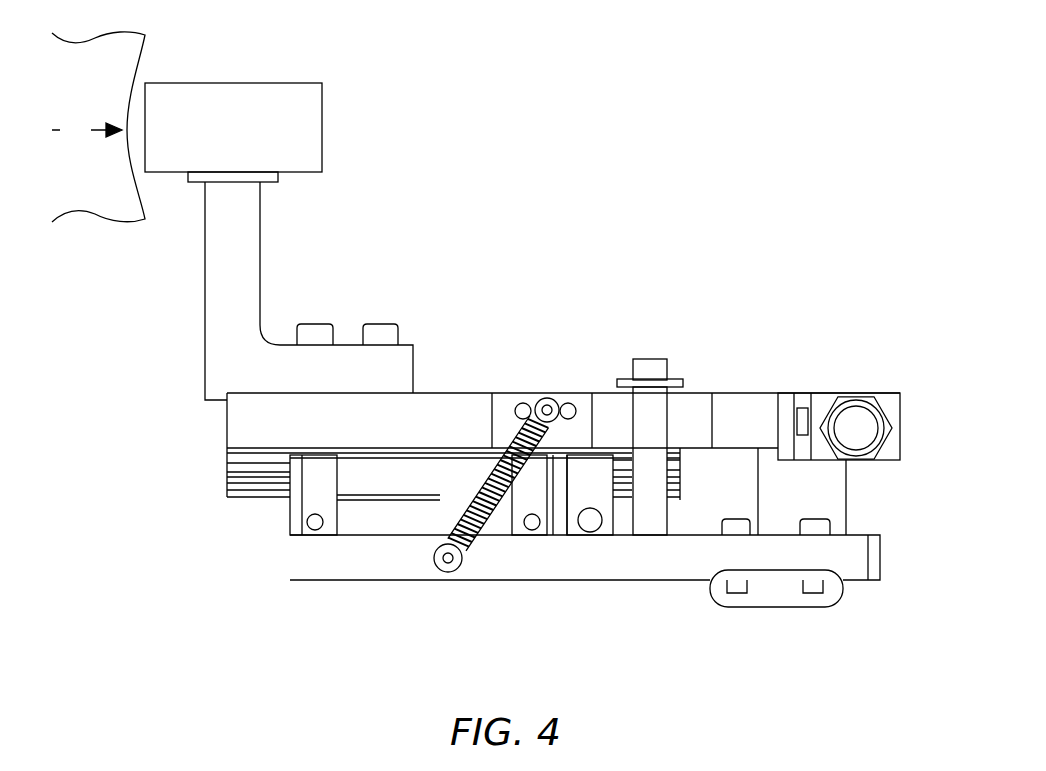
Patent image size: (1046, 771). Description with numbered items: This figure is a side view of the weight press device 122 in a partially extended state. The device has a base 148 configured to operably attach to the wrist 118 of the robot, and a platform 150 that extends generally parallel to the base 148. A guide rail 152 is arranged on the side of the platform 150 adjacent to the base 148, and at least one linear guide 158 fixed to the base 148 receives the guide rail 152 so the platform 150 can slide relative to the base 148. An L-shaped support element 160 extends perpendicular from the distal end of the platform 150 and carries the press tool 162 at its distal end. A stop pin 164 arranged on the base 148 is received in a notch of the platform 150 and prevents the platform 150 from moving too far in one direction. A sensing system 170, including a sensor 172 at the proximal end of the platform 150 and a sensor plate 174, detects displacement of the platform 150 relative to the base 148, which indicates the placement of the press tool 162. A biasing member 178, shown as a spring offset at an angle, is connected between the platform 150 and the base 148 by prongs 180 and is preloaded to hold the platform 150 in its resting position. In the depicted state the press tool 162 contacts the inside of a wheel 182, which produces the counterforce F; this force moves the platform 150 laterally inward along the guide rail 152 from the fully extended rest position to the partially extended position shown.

The wrist 118 is at (778, 607).
The weight press device 122 is at (850, 198).
The base 148 is at (848, 553).
The platform 150 is at (428, 430).
The guide rail 152 is at (225, 492).
The linear guide 158 is at (312, 497).
The support element 160 is at (252, 250).
The press tool 162 is at (222, 83).
The stop pin 164 is at (650, 372).
The sensing system 170 is at (905, 425).
The sensor 172 is at (856, 420).
The sensor plate 174 is at (746, 423).
The biasing member 178 is at (518, 432).
The prongs 180 is at (547, 398).
The wheel 182 is at (96, 199).